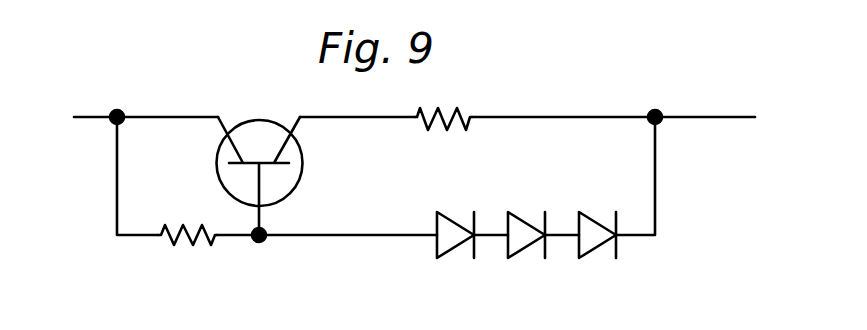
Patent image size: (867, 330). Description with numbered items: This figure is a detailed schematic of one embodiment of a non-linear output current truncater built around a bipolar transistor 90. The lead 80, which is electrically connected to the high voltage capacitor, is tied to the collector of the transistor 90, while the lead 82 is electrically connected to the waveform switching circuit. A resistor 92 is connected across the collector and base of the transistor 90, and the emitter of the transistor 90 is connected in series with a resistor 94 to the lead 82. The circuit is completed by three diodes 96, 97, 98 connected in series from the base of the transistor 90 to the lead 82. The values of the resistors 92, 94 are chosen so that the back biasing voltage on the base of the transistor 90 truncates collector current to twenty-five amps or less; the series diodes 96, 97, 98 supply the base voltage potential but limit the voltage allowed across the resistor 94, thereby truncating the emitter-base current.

The lead 80 is at (104, 115).
The lead 82 is at (716, 120).
The bipolar transistor 90 is at (258, 119).
The resistor 92 is at (187, 245).
The resistor 94 is at (457, 108).
The diode 96 is at (457, 222).
The diode 97 is at (527, 248).
The diode 98 is at (597, 248).